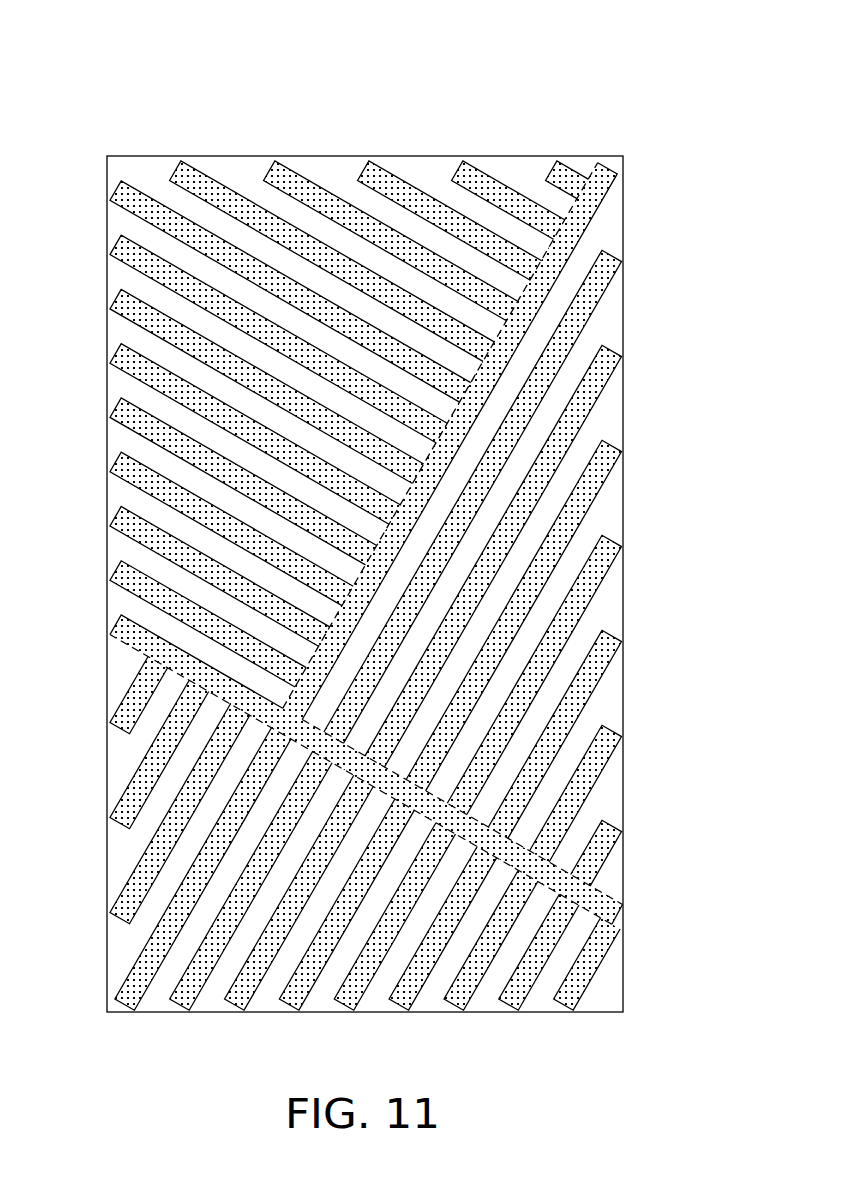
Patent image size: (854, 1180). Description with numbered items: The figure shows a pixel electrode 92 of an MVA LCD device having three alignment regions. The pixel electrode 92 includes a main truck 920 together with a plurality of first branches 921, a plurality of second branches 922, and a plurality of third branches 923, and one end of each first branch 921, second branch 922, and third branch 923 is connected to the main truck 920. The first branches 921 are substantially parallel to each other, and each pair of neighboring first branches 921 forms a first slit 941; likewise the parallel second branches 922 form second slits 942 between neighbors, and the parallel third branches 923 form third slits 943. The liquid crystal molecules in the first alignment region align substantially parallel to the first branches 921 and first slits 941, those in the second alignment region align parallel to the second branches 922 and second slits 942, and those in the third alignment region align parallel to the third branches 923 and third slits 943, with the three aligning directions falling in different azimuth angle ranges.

The pixel electrode 92 is at (627, 92).
The main truck 920 is at (111, 634).
The first branches 921 is at (604, 473).
The second branches 922 is at (178, 163).
The third branches 923 is at (252, 990).
The first slit 941 is at (517, 568).
The second slit 942 is at (325, 386).
The third slit 943 is at (365, 868).